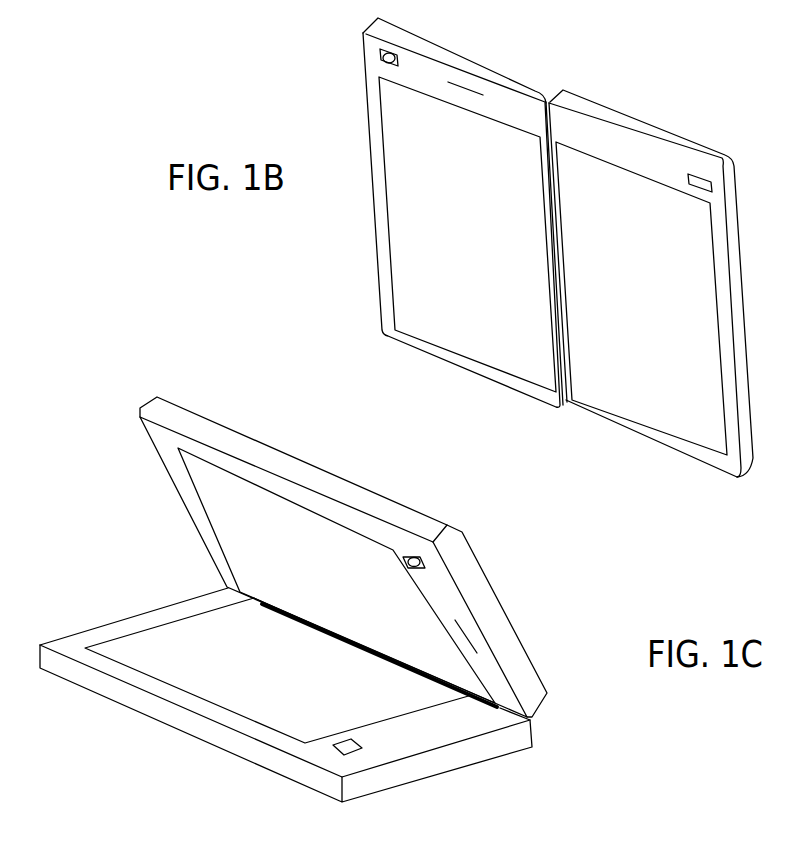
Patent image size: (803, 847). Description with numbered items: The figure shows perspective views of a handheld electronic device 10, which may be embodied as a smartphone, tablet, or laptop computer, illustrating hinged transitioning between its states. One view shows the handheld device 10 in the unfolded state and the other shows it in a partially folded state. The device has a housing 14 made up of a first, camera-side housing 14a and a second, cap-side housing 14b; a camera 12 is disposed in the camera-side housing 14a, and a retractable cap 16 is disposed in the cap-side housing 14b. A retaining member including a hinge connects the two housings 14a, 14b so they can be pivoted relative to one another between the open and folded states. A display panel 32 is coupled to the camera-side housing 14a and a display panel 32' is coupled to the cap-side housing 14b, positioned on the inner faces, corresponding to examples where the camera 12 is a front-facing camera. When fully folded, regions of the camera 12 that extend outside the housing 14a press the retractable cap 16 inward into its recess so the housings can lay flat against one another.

In FIG. 1B, the handheld electronic device 10 is at (332, 279).
In FIG. 1C, the handheld electronic device 10 is at (125, 571).
In FIG. 1B, the camera 12 is at (378, 57).
In FIG. 1C, the camera 12 is at (407, 557).
In FIG. 1C, the housing 14 is at (355, 645).
In FIG. 1B, the camera-side housing 14a is at (460, 47).
In FIG. 1C, the camera-side housing 14a is at (470, 545).
In FIG. 1B, the cap-side housing 14b is at (640, 118).
In FIG. 1C, the cap-side housing 14b is at (233, 753).
In FIG. 1B, the retractable cap 16 is at (712, 190).
In FIG. 1C, the retractable cap 16 is at (355, 738).
In FIG. 1B, the display panel 32 is at (467, 234).
In FIG. 1C, the display panel 32 is at (336, 575).
In FIG. 1B, the display panel 32' is at (641, 298).
In FIG. 1C, the display panel 32' is at (278, 670).